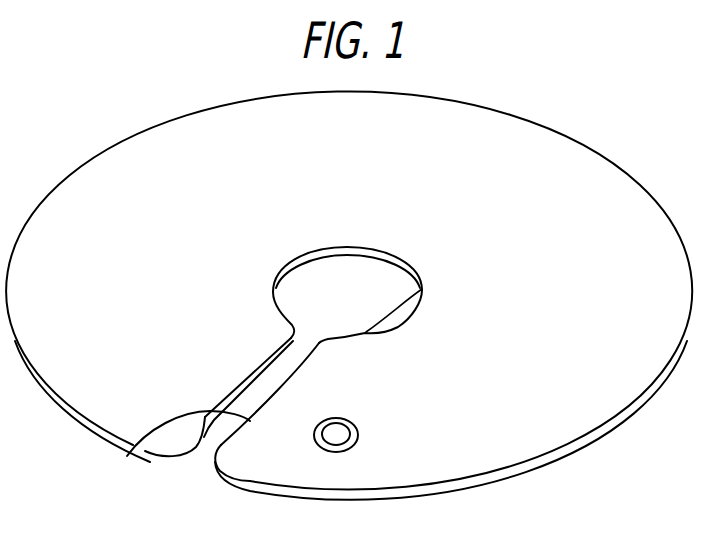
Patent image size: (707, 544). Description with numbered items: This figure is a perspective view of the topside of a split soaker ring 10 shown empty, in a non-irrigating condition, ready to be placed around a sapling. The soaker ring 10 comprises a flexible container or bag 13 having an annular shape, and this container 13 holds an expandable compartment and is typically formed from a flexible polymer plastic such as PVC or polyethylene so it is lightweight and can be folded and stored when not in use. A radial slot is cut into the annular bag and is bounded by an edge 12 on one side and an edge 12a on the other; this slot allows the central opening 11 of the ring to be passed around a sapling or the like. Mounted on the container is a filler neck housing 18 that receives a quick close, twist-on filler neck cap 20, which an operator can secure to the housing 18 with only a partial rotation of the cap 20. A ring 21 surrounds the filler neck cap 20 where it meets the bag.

The split soaker ring 10 is at (603, 213).
The central opening 11 is at (422, 289).
The edge 12 is at (196, 440).
The edge 12a is at (140, 447).
The flexible container or bag 13 is at (492, 457).
The filler neck housing 18 is at (357, 410).
The filler neck cap 20 is at (336, 434).
The grommet ring 21 is at (358, 434).